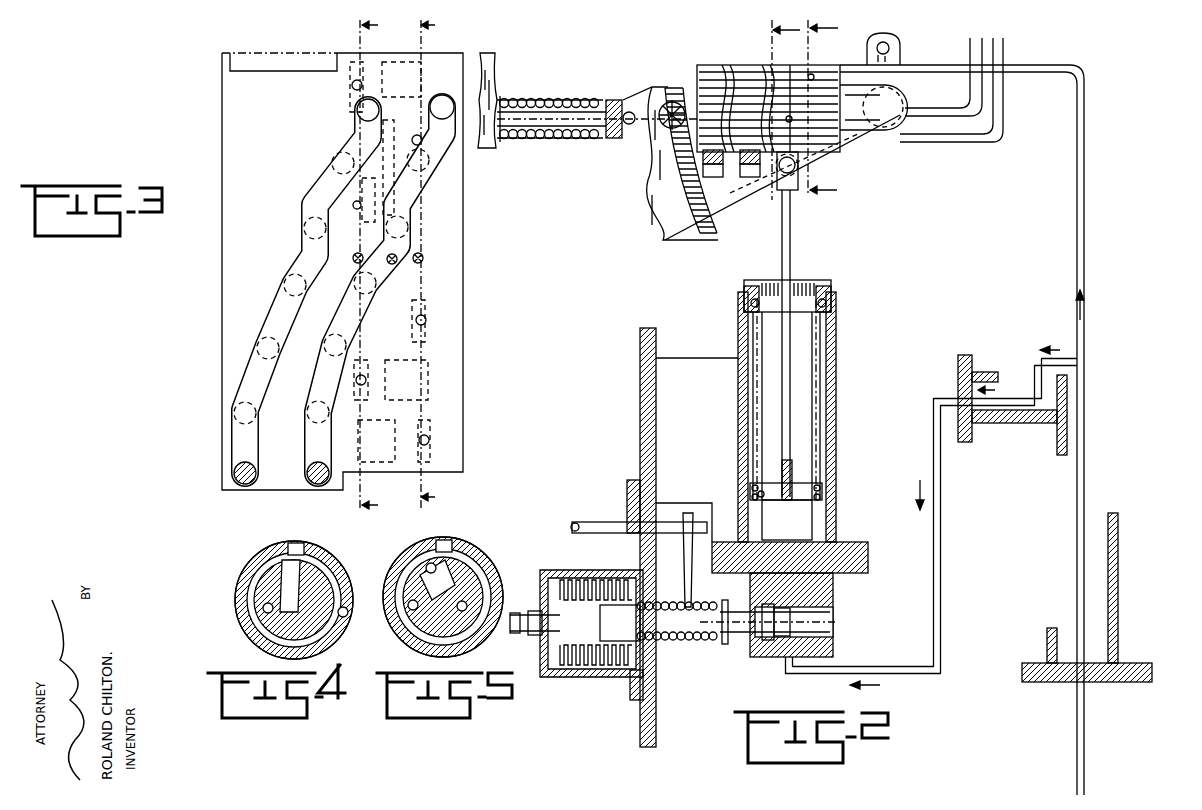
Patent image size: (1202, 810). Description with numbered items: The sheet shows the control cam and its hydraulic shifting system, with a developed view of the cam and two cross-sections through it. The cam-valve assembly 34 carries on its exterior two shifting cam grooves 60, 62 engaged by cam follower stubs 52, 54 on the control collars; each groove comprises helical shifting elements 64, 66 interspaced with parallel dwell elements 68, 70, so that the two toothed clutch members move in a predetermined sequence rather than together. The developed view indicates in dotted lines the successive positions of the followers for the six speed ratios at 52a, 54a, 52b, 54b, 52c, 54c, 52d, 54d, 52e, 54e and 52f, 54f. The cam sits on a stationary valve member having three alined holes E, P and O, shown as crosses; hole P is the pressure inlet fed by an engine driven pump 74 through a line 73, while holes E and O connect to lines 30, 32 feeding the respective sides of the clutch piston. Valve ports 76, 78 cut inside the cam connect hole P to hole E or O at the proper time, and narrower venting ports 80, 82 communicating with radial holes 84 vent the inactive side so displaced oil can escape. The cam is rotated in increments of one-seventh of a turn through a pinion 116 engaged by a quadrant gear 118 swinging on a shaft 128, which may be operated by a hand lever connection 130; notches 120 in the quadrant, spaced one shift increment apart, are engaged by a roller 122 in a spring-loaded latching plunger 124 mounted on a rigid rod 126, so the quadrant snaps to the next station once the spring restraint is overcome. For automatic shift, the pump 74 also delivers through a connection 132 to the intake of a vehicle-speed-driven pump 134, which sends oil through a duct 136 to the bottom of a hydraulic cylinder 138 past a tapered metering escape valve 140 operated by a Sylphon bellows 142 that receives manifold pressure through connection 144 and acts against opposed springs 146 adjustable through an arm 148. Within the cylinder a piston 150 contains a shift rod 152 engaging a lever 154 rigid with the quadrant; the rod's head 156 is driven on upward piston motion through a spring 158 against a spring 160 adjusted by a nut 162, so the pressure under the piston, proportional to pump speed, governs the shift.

In FIG. 2, the line 30 is at (1004, 47).
In FIG. 2, the line 32 is at (968, 47).
In FIG. 3, the cam-valve assembly 34 is at (222, 158).
In FIG. 2, the cam-valve assembly 34 is at (712, 58).
In FIG. 3, the cam follower stub 52 is at (234, 475).
In FIG. 2, the cam follower stub 52 is at (660, 185).
In FIG. 3, the cam follower position 52a is at (233, 413).
In FIG. 3, the cam follower position 52b is at (257, 350).
In FIG. 3, the cam follower position 52c is at (286, 280).
In FIG. 3, the cam follower position 52d is at (302, 234).
In FIG. 3, the cam follower position 52e is at (332, 163).
In FIG. 3, the cam follower position 52f is at (356, 110).
In FIG. 3, the cam follower stub 54 is at (306, 477).
In FIG. 2, the cam follower stub 54 is at (760, 178).
In FIG. 3, the cam follower position 54a is at (306, 416).
In FIG. 3, the cam follower position 54b is at (325, 340).
In FIG. 3, the cam follower position 54c is at (353, 288).
In FIG. 3, the cam follower position 54d is at (430, 208).
In FIG. 3, the cam follower position 54e is at (432, 170).
In FIG. 3, the cam follower position 54f is at (446, 95).
In FIG. 3, the shifting cam groove 60 is at (231, 445).
In FIG. 4, the shifting cam groove 60 is at (250, 612).
In FIG. 5, the shifting cam groove 60 is at (443, 597).
In FIG. 2, the shifting cam groove 60 is at (658, 165).
In FIG. 3, the shifting cam groove 62 is at (304, 450).
In FIG. 4, the shifting cam groove 62 is at (300, 545).
In FIG. 5, the shifting cam groove 62 is at (412, 620).
In FIG. 2, the shifting cam groove 62 is at (733, 170).
In FIG. 3, the helical shifting element 64 is at (264, 297).
In FIG. 3, the helical shifting element 66 is at (345, 325).
In FIG. 3, the dwell element 68 is at (301, 208).
In FIG. 3, the dwell element 70 is at (442, 158).
In FIG. 2, the dwell element 70 is at (481, 107).
In FIG. 2, the line 73 is at (1084, 236).
In FIG. 2, the engine driven pump 74 is at (1118, 660).
In FIG. 3, the valve port 76 is at (405, 55).
In FIG. 5, the valve port 76 is at (420, 555).
In FIG. 3, the valve port 78 is at (352, 123).
In FIG. 4, the valve port 78 is at (340, 567).
In FIG. 3, the venting port 80 is at (425, 300).
In FIG. 4, the venting port 80 is at (348, 600).
In FIG. 5, the venting port 80 is at (448, 540).
In FIG. 3, the venting port 82 is at (350, 70).
In FIG. 4, the venting port 82 is at (308, 548).
In FIG. 5, the venting port 82 is at (402, 608).
In FIG. 3, the radial hole 84 is at (351, 86).
In FIG. 4, the radial hole 84 is at (296, 540).
In FIG. 5, the radial hole 84 is at (470, 552).
In FIG. 2, the radial hole 84 is at (813, 75).
In FIG. 2, the pinion 116 is at (672, 100).
In FIG. 2, the quadrant gear 118 is at (712, 240).
In FIG. 2, the notch 120 is at (664, 220).
In FIG. 2, the roller 122 is at (630, 126).
In FIG. 2, the spring-loaded latching plunger 124 is at (575, 140).
In FIG. 2, the rigid rod 126 is at (507, 100).
In FIG. 2, the shaft 128 is at (888, 148).
In FIG. 2, the hand lever connection 130 is at (888, 33).
In FIG. 2, the connection 132 is at (1008, 395).
In FIG. 2, the pump 134 is at (958, 378).
In FIG. 2, the duct 136 is at (942, 562).
In FIG. 2, the hydraulic cylinder 138 is at (838, 494).
In FIG. 2, the tapered metering escape valve 140 is at (842, 610).
In FIG. 2, the Sylphon bellows 142 is at (586, 590).
In FIG. 2, the connection 144 is at (516, 612).
In FIG. 2, the springs 146 is at (680, 640).
In FIG. 2, the arm 148 is at (698, 520).
In FIG. 2, the piston 150 is at (822, 437).
In FIG. 2, the shift rod 152 is at (792, 245).
In FIG. 2, the lever 154 is at (835, 150).
In FIG. 2, the head 156 is at (765, 490).
In FIG. 2, the spring 158 is at (836, 520).
In FIG. 2, the spring 160 is at (822, 355).
In FIG. 2, the nut 162 is at (830, 290).
In FIG. 3, the hole E is at (365, 256).
In FIG. 4, the hole E is at (260, 582).
In FIG. 5, the hole E is at (400, 576).
In FIG. 3, the hole P is at (398, 259).
In FIG. 5, the hole P is at (476, 540).
In FIG. 3, the hole O is at (425, 257).
In FIG. 5, the hole O is at (428, 548).